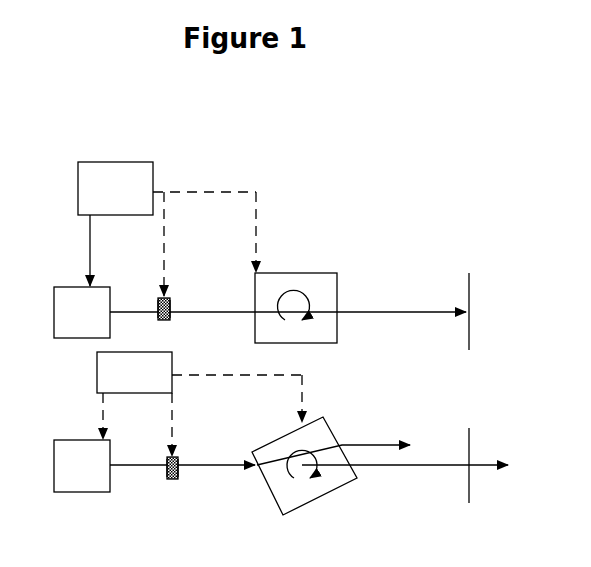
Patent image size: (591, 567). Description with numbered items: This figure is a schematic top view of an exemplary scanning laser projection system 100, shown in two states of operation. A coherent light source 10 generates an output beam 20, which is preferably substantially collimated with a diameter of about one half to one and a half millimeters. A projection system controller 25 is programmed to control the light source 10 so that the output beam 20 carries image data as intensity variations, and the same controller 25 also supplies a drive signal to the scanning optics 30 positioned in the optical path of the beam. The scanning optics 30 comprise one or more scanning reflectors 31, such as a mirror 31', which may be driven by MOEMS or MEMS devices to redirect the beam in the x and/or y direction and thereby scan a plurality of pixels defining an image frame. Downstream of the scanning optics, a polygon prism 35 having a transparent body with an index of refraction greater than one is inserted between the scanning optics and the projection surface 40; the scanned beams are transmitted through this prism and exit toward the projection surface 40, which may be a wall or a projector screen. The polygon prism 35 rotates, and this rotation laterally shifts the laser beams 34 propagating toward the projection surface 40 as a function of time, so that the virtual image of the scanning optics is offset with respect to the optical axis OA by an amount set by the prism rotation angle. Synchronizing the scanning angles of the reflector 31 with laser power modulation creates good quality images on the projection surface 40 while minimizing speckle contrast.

The coherent light source 10 is at (72, 285).
The output beam 20 is at (134, 314).
The projection system controller 25 is at (190, 309).
The scanning optics 30 is at (181, 271).
The scanning reflector 31 is at (152, 381).
The mirror 31' is at (187, 381).
The laser beams 34 is at (374, 439).
The polygon prism 35 is at (279, 272).
The projection surface 40 is at (474, 297).
The laser projection system 100 is at (286, 195).
The optical axis OA is at (403, 309).